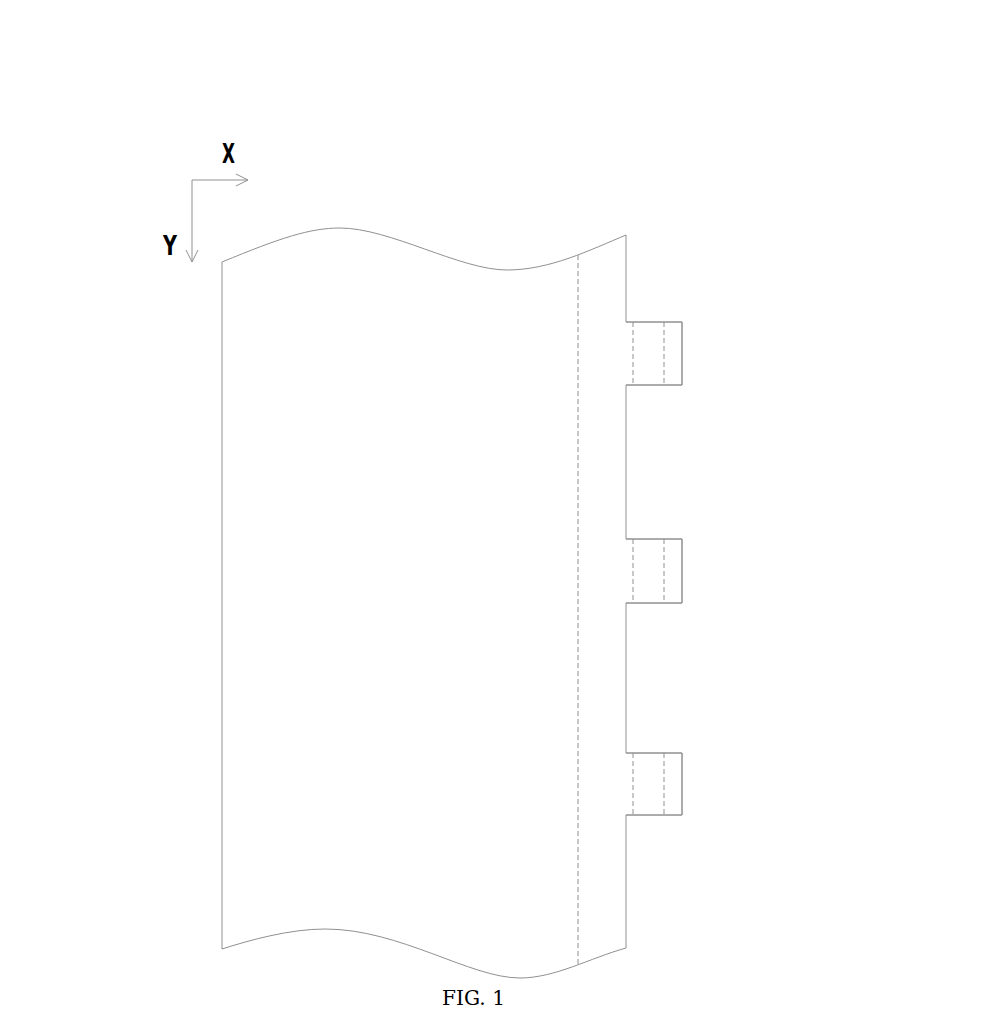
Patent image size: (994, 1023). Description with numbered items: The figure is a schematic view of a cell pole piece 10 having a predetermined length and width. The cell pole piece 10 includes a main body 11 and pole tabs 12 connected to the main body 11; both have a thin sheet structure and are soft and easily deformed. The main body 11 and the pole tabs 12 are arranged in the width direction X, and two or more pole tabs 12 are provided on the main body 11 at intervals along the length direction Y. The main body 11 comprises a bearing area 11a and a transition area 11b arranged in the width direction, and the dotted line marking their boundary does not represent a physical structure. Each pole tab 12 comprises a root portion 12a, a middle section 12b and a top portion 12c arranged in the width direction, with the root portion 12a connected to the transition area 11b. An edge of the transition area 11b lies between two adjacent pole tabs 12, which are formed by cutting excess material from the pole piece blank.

The cell pole piece 10 is at (465, 33).
The main body 11 is at (545, 145).
The bearing area 11a is at (390, 310).
The transition area 11b is at (602, 280).
The pole tab 12 is at (703, 508).
The root portion 12a is at (631, 323).
The middle section 12b is at (654, 328).
The top portion 12c is at (682, 324).